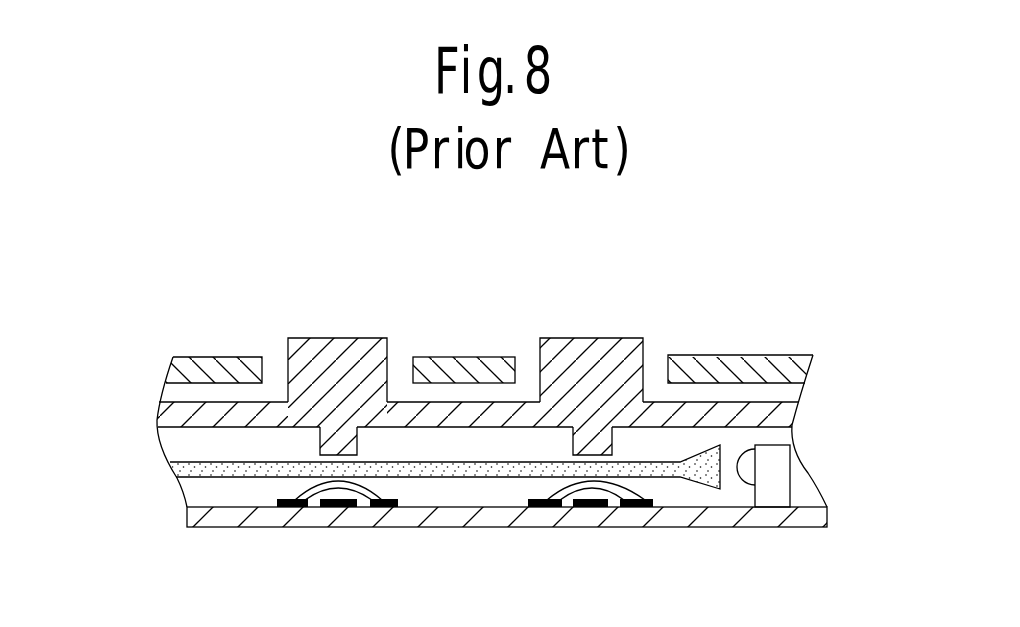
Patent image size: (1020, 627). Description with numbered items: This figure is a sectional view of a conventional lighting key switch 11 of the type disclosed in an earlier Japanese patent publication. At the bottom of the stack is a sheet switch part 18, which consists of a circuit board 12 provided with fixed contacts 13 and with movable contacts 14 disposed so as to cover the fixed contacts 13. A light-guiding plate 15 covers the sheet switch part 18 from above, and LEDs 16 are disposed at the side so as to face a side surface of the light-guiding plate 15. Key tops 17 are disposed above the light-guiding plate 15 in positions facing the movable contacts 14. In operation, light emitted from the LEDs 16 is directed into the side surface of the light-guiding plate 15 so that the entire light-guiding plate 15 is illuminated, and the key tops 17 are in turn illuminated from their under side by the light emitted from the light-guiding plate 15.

The key switch 11 is at (752, 275).
The circuit board 12 is at (705, 522).
The fixed contacts 13 is at (590, 507).
The movable contacts 14 is at (557, 495).
The light-guiding plate 15 is at (176, 470).
The LEDs 16 is at (785, 467).
The key tops 17 is at (590, 337).
The sheet switch part 18 is at (175, 526).